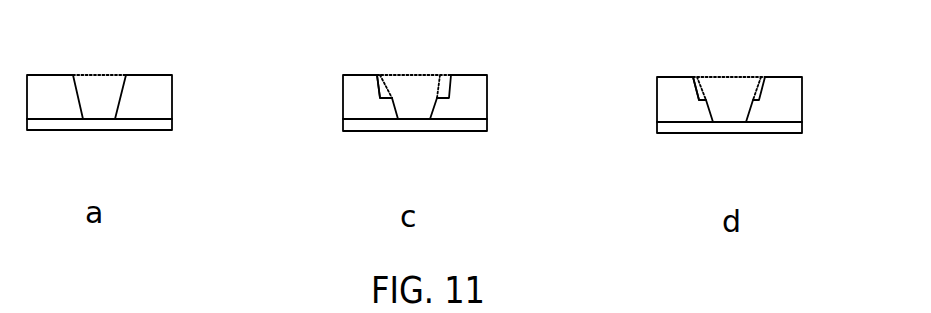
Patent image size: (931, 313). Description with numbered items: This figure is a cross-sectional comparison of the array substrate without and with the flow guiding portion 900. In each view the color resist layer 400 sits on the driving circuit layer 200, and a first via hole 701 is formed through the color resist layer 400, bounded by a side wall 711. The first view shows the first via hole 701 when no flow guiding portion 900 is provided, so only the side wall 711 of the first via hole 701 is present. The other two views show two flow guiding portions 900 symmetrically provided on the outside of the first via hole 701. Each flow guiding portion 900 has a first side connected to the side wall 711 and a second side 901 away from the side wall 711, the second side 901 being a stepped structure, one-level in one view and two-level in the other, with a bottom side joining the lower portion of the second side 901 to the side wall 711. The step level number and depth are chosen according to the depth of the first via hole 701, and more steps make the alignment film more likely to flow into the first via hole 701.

The driving circuit layer 200 is at (158, 127).
The color resist layer 400 is at (158, 99).
The first via hole 701 is at (98, 104).
The side wall 711 is at (117, 103).
The flow guiding portion 900 is at (376, 98).
The second side 901 is at (377, 88).